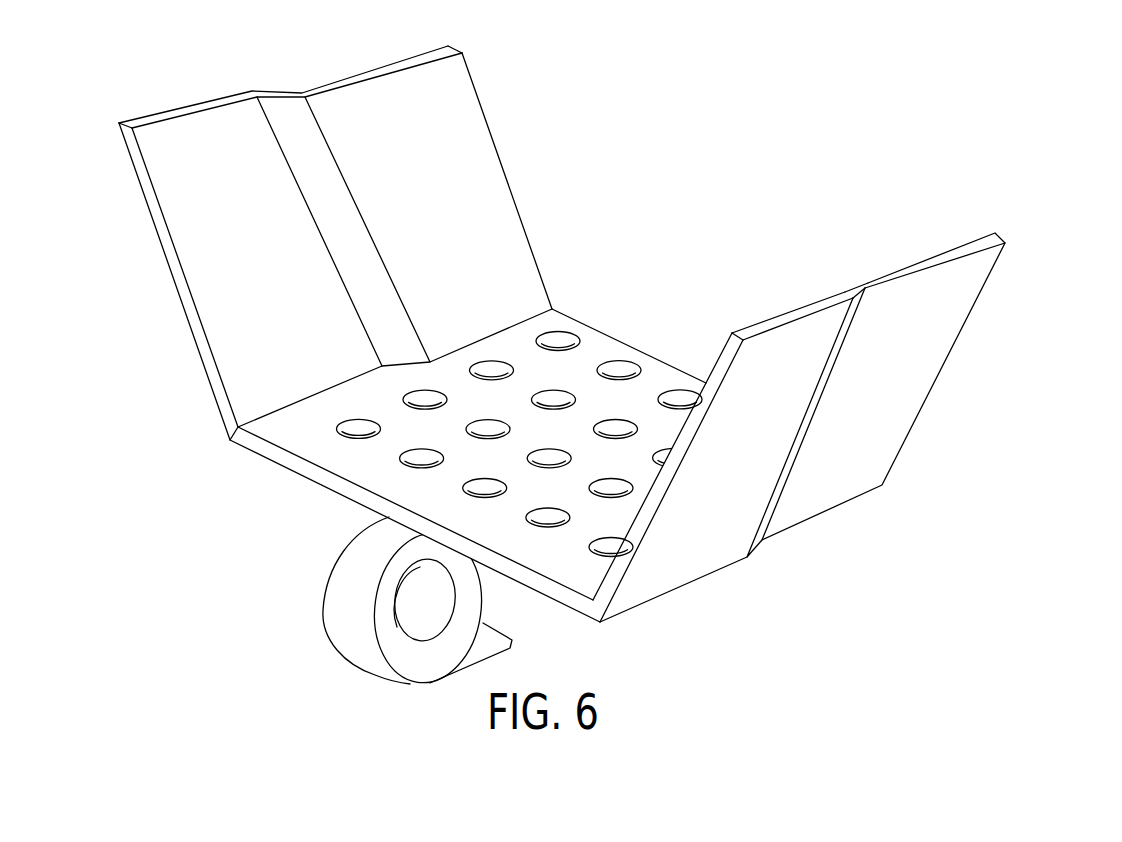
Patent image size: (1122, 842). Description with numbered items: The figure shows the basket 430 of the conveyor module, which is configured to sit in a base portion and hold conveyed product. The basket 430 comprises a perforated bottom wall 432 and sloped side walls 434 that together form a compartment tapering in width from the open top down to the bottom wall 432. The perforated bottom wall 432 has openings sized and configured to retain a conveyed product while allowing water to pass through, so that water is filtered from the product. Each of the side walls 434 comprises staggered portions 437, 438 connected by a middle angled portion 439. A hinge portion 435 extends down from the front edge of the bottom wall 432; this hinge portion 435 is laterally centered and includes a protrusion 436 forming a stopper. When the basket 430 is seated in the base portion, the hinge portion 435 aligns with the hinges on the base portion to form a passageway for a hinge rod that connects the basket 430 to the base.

The basket 430 is at (672, 135).
The perforated bottom wall 432 is at (318, 455).
The sloped side walls 434 is at (397, 173).
The hinge portion 435 is at (343, 583).
The protrusion 436 is at (512, 645).
The staggered portion 437 is at (797, 310).
The staggered portion 438 is at (928, 258).
The middle angled portion 439 is at (852, 295).